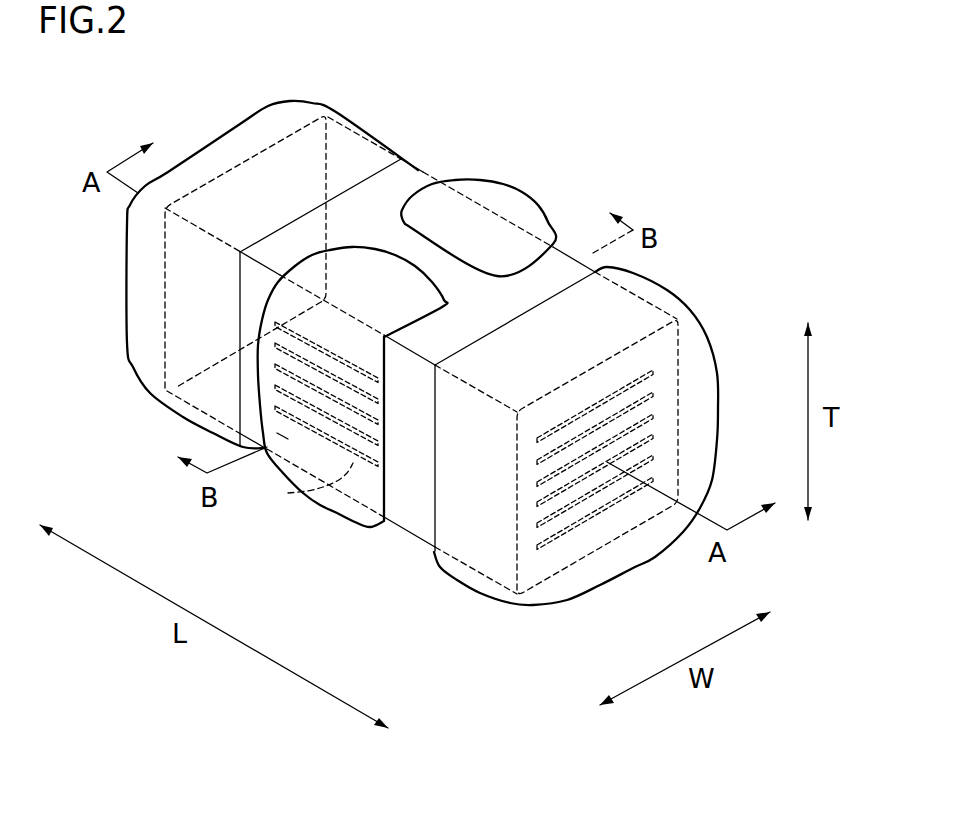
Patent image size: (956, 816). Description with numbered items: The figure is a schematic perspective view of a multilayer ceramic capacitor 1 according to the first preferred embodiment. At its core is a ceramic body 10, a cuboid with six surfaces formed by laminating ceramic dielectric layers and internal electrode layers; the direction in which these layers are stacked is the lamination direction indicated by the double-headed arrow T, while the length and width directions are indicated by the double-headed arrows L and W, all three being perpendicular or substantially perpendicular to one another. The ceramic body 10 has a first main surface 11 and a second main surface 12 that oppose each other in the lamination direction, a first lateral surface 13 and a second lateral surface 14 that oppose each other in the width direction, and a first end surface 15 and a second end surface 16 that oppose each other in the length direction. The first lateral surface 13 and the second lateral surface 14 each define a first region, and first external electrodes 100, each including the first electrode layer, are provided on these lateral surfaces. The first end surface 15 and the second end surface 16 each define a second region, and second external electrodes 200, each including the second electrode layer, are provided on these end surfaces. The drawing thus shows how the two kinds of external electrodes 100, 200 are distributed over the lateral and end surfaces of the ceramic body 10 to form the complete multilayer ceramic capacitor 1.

The multilayer ceramic capacitor 1 is at (686, 119).
The ceramic body 10 is at (418, 158).
The first main surface 11 is at (527, 284).
The second main surface 12 is at (337, 505).
The first lateral surface 13 is at (410, 511).
The second lateral surface 14 is at (400, 185).
The first end surface 15 is at (245, 187).
The second end surface 16 is at (637, 358).
The first external electrode 100 is at (497, 205).
The second external electrode 200 is at (273, 120).